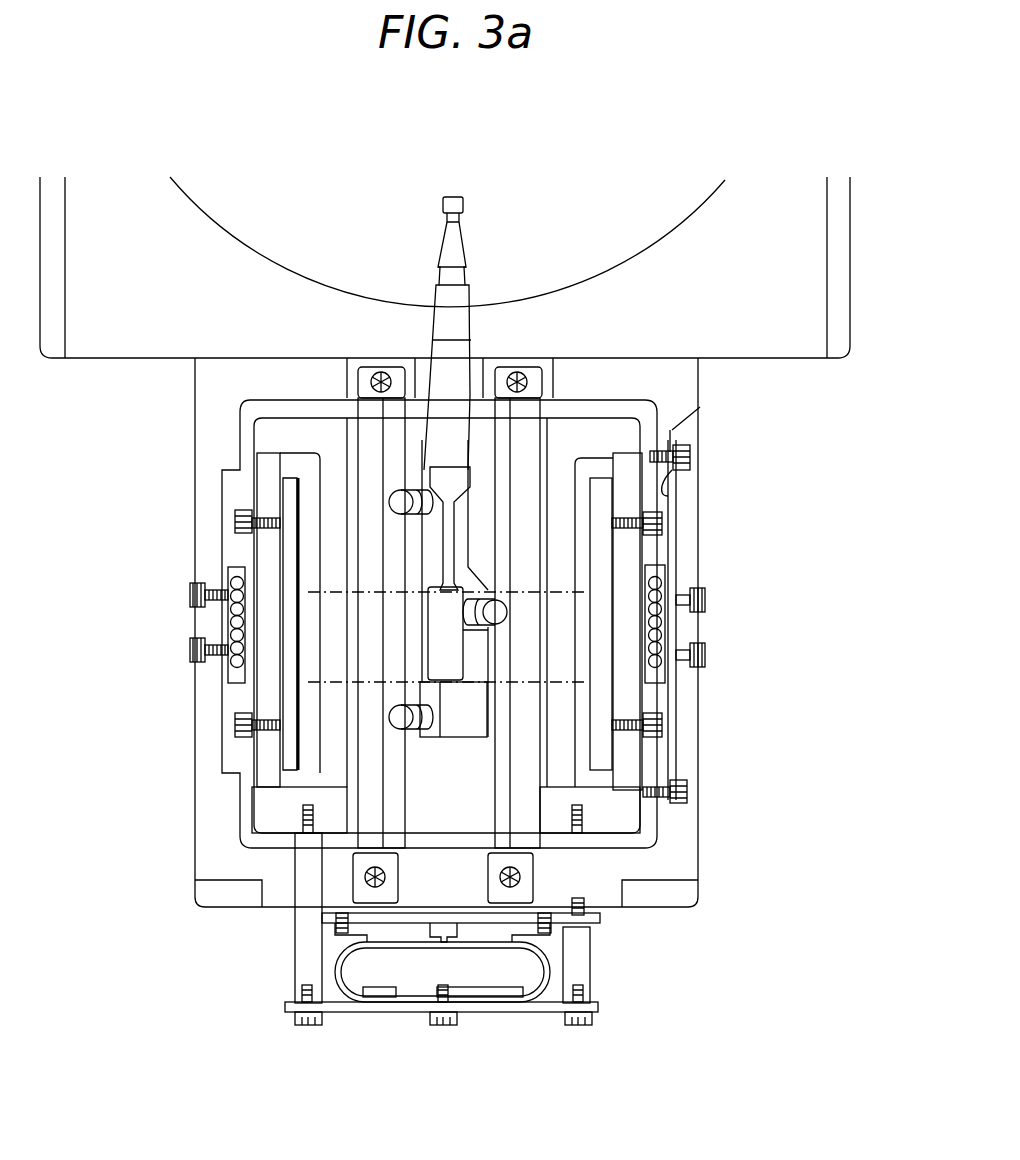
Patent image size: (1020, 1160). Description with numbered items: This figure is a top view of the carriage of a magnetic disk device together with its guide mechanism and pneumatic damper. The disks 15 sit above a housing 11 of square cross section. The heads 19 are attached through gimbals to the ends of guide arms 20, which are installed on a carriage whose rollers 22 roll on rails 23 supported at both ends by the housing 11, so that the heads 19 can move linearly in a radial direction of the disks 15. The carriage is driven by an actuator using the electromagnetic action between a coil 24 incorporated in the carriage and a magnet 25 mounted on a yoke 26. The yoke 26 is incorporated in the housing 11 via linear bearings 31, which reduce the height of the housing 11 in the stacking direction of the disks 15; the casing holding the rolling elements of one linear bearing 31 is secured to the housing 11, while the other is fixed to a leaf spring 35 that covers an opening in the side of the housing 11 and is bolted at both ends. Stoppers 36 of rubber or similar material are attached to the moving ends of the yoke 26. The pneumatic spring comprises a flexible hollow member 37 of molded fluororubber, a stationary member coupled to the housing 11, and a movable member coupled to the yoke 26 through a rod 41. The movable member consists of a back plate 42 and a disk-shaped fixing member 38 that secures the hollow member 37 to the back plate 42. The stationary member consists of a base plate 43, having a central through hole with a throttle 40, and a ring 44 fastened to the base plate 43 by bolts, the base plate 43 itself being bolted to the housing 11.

The housing 11 is at (204, 403).
The disks 15 is at (648, 216).
The heads 19 is at (465, 205).
The guide arms 20 is at (457, 353).
The rollers 22 is at (494, 608).
The rails 23 is at (530, 465).
The coil 24 is at (580, 669).
The magnet 25 is at (290, 497).
The yoke 26 is at (327, 772).
The linear bearings 31 is at (240, 549).
The leaf spring 35 is at (662, 492).
The stoppers 36 is at (641, 843).
The flexible hollow member 37 is at (335, 968).
The fixing member 38 is at (472, 995).
The throttle 40 is at (446, 938).
The rod 41 is at (587, 960).
The back plate 42 is at (598, 1007).
The base plate 43 is at (390, 933).
The ring 44 is at (330, 928).